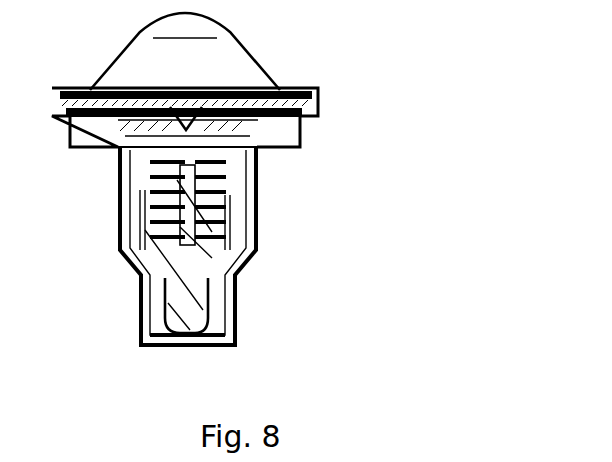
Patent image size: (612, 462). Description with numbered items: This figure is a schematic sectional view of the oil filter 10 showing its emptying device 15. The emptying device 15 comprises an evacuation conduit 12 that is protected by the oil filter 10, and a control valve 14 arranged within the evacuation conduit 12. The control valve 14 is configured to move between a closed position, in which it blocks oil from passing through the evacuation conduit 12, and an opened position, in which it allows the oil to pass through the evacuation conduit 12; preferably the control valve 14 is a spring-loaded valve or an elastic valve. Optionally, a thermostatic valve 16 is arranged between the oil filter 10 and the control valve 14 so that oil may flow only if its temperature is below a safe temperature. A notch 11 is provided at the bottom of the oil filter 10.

The oil filter 10 is at (251, 48).
The thermostatic valve 16 is at (253, 87).
The emptying device 15 is at (322, 167).
The evacuation conduit 12 is at (258, 213).
The control valve 14 is at (188, 306).
The notch 11 is at (140, 320).